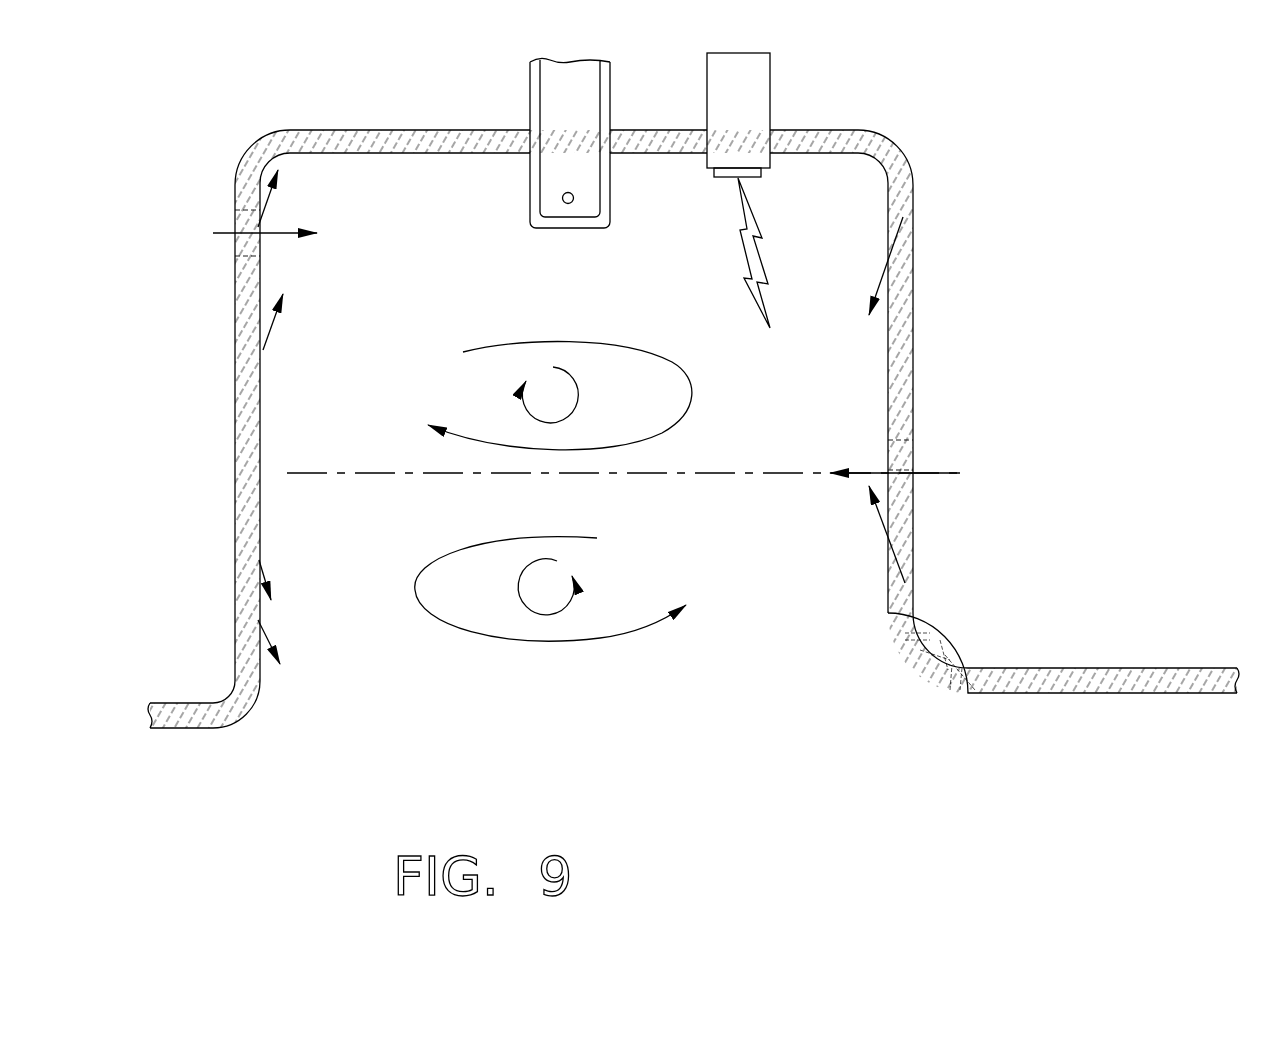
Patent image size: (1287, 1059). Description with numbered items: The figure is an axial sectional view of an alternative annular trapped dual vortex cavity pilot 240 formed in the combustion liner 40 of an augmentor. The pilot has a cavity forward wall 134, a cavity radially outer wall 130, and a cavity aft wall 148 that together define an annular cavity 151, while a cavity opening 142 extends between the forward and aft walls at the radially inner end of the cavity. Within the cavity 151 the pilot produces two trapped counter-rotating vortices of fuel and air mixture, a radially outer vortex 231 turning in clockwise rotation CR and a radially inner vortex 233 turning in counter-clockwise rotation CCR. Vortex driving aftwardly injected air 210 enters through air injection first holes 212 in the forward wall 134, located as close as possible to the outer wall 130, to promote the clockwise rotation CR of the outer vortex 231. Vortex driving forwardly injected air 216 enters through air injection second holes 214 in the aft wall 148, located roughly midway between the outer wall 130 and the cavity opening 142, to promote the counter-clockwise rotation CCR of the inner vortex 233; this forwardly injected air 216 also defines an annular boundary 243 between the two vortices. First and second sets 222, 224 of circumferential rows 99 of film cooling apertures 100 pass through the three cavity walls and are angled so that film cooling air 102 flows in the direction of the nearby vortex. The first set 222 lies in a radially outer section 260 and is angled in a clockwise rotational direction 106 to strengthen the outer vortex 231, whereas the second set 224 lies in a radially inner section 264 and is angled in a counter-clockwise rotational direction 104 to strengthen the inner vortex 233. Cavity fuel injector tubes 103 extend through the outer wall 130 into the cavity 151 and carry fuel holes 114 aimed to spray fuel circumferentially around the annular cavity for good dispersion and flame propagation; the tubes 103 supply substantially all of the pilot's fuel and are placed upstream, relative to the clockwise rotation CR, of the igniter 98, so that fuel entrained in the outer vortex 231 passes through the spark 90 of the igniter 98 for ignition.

The combustion liner 40 is at (1195, 668).
The spark 90 is at (757, 290).
The igniter 98 is at (610, 105).
The circumferential rows 99 is at (262, 280).
The film cooling apertures 100 is at (262, 400).
The film cooling air 102 is at (262, 212).
The cavity fuel injector tubes 103 is at (770, 90).
The counter-clockwise rotational direction 104 is at (268, 620).
The clockwise rotational direction 106 is at (265, 345).
The fuel holes 114 is at (574, 198).
The cavity radially outer wall 130 is at (393, 128).
The cavity forward wall 134 is at (235, 365).
The cavity opening 142 is at (395, 688).
The cavity aft wall 148 is at (913, 387).
The annular cavity 151 is at (768, 655).
The aftwardly injected air 210 is at (277, 240).
The air injection first holes 212 is at (238, 215).
The air injection second holes 214 is at (913, 455).
The forwardly injected air 216 is at (935, 480).
The first set of circumferential rows 222 is at (913, 248).
The second set of circumferential rows 224 is at (913, 548).
The radially outer vortex 231 is at (665, 430).
The radially inner vortex 233 is at (575, 643).
The trapped dual vortex cavity pilot 240 is at (255, 115).
The annular boundary 243 is at (447, 473).
The radially outer section 260 is at (230, 300).
The radially inner section 264 is at (230, 615).
The clockwise rotation CR is at (580, 405).
The counter-clockwise rotation CCR is at (520, 600).